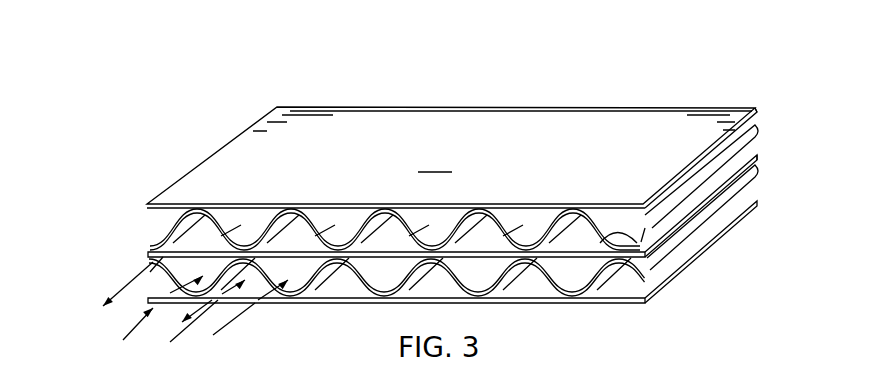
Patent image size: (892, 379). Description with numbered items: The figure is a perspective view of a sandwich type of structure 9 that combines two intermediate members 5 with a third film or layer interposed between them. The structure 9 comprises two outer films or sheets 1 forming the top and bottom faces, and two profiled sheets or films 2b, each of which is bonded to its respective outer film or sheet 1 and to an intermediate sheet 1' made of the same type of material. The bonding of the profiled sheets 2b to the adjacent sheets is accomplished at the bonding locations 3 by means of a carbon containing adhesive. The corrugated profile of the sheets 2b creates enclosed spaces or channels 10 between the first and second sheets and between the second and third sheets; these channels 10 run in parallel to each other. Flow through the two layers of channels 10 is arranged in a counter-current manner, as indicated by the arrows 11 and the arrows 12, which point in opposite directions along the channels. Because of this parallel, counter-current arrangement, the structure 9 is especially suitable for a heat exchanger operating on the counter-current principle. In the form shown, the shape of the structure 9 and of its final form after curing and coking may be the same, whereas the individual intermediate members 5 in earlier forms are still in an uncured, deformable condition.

The outer film or sheet 1 is at (431, 221).
The intermediate sheet 1' is at (430, 209).
The profiled sheet or film 2b is at (600, 277).
The bonding location 3 is at (248, 212).
The intermediate member 5 is at (758, 113).
The sandwich type structure 9 is at (204, 128).
The enclosed spaces or channels 10 is at (377, 217).
The arrows 11 is at (150, 307).
The arrows 12 is at (213, 335).